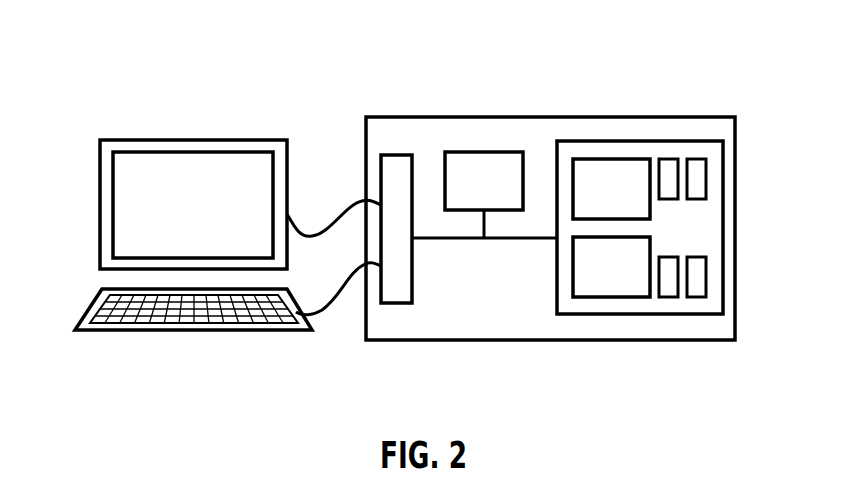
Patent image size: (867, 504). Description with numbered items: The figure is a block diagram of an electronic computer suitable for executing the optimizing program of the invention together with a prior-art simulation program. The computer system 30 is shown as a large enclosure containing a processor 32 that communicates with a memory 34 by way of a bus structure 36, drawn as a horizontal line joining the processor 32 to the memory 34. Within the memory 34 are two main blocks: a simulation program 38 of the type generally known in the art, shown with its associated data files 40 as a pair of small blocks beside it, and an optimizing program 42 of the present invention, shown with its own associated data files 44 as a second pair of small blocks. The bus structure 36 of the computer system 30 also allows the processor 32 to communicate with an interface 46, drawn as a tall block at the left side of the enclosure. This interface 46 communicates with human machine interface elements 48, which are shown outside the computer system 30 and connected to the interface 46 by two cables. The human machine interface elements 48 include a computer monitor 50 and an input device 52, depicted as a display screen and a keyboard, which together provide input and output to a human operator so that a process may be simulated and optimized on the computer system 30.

The computer system 30 is at (568, 211).
The processor 32 is at (485, 165).
The memory 34 is at (726, 146).
The bus structure 36 is at (510, 238).
The simulation program 38 is at (602, 172).
The data files 40 is at (697, 165).
The optimizing program 42 is at (608, 288).
The data files 44 is at (667, 290).
The interface 46 is at (398, 303).
The human machine interface elements 48 is at (202, 205).
The computer monitor 50 is at (100, 212).
The input device 52 is at (86, 310).